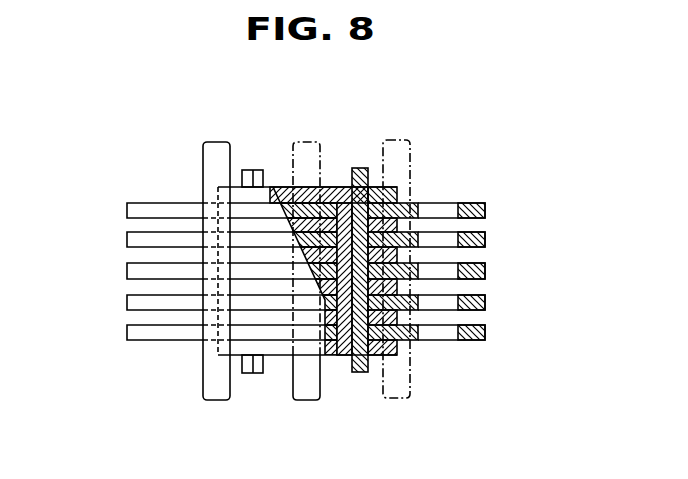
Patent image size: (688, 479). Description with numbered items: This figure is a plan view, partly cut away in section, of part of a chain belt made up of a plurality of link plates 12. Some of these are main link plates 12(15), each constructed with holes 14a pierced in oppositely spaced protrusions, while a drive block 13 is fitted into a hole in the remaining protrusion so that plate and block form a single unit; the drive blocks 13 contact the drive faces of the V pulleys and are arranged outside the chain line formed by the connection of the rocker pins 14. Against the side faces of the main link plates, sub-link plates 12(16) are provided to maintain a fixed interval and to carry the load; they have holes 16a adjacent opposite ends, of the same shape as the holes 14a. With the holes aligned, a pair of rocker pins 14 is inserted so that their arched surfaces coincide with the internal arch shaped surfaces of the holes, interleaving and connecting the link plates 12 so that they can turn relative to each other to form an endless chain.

The link plates 12 is at (309, 278).
The drive block 13 is at (212, 402).
The rocker pins 14 is at (252, 170).
The holes 14a is at (382, 188).
The main link plate 15 is at (127, 238).
The sub-link plates 16 is at (127, 208).
The holes 16a is at (442, 208).